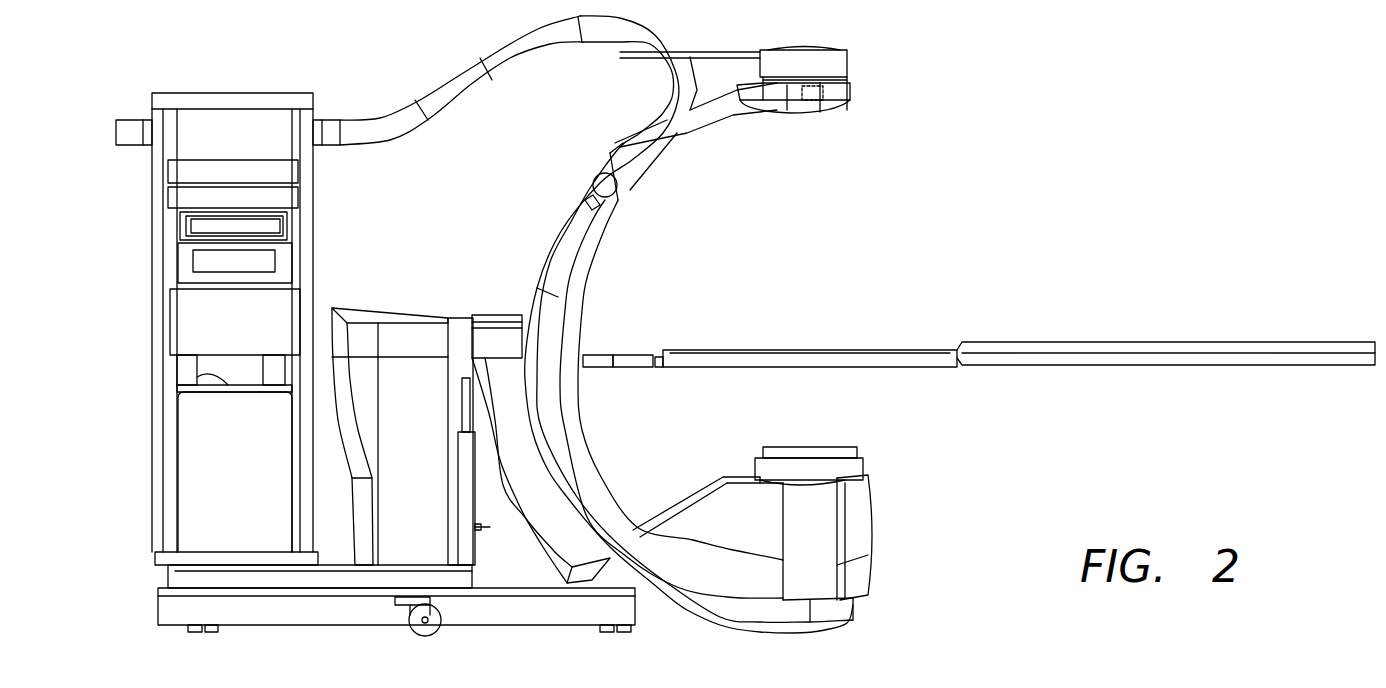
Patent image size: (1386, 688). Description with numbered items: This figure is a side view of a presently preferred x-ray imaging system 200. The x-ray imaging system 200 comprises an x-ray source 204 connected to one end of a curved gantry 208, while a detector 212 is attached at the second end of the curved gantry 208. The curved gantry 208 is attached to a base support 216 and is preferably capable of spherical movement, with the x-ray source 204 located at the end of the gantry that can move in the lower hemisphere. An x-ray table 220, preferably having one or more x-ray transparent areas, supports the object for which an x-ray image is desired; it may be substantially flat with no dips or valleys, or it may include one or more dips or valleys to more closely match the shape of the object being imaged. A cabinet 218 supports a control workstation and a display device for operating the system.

The x-ray imaging system 200 is at (1125, 145).
The x-ray source 204 is at (872, 518).
The curved gantry 208 is at (580, 345).
The detector 212 is at (820, 115).
The base support 216 is at (393, 553).
The cabinet 218 is at (152, 317).
The x-ray table 220 is at (815, 350).